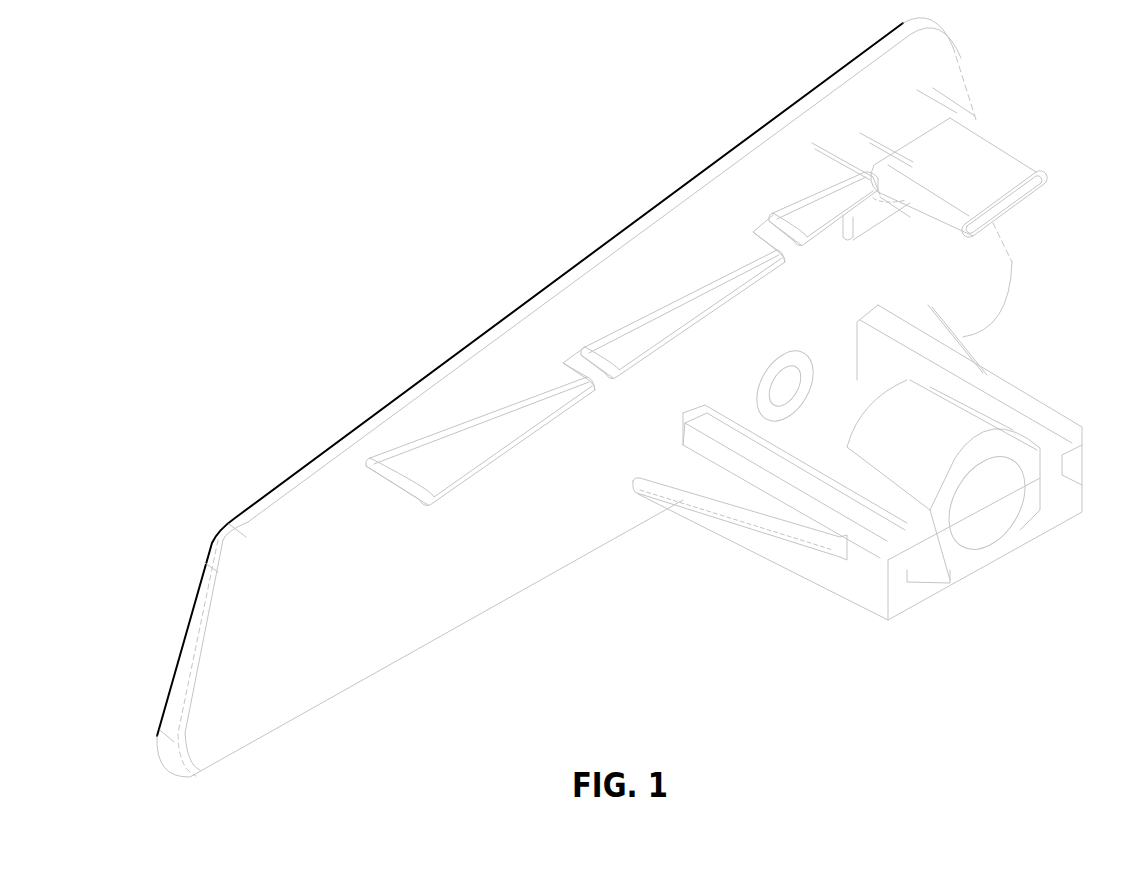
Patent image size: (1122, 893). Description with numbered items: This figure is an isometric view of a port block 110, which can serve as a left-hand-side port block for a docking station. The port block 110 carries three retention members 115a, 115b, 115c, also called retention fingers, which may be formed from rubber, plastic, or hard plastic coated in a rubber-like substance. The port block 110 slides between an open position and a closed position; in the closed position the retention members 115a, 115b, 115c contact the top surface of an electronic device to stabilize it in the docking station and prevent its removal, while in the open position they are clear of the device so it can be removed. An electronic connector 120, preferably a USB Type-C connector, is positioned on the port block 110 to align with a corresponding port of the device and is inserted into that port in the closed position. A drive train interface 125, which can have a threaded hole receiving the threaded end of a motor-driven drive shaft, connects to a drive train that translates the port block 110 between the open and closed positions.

The port block 110 is at (290, 153).
The retention member 115a is at (510, 412).
The retention member 115b is at (703, 262).
The retention member 115c is at (812, 192).
The electronic connector 120 is at (974, 165).
The drive train interface 125 is at (978, 523).